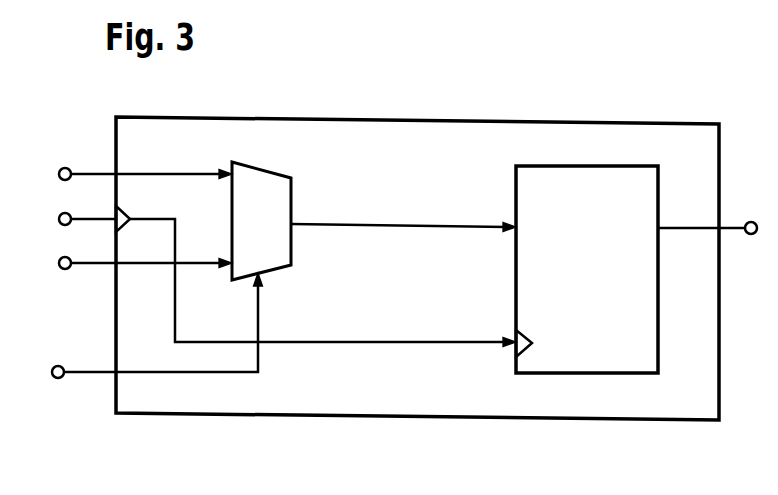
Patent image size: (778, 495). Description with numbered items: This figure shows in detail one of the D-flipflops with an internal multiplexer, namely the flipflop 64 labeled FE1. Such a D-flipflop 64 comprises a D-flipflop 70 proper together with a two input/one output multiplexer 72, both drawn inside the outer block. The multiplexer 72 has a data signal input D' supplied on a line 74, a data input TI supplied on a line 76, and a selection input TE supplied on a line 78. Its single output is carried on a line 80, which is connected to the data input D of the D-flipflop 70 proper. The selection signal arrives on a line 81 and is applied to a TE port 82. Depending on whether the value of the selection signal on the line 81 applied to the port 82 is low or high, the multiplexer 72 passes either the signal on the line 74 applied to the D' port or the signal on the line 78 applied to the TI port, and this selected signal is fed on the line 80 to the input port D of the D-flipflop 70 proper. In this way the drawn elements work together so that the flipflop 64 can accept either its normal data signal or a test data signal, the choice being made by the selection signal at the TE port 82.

The D-flipflop with internal multiplexer 64 is at (417, 289).
The D-flipflop proper 70 is at (636, 251).
The two input/one output multiplexer 72 is at (270, 207).
The line 74 is at (145, 153).
The line 76 is at (273, 265).
The line 78 is at (144, 274).
The line 80 is at (403, 243).
The line 81 is at (160, 345).
The TE port 82 is at (38, 354).